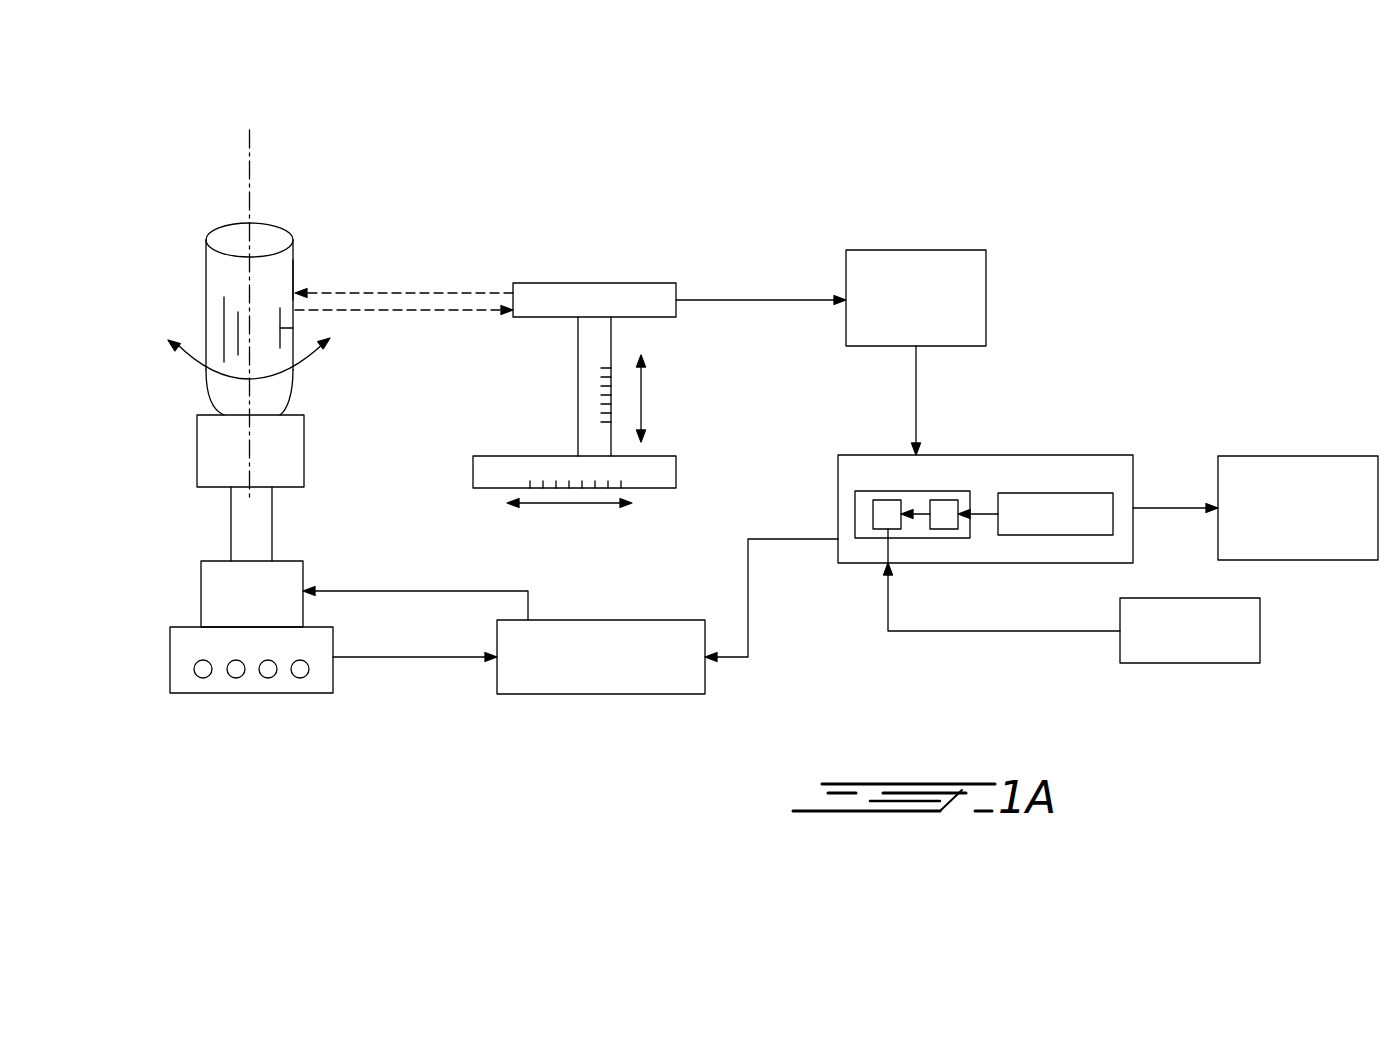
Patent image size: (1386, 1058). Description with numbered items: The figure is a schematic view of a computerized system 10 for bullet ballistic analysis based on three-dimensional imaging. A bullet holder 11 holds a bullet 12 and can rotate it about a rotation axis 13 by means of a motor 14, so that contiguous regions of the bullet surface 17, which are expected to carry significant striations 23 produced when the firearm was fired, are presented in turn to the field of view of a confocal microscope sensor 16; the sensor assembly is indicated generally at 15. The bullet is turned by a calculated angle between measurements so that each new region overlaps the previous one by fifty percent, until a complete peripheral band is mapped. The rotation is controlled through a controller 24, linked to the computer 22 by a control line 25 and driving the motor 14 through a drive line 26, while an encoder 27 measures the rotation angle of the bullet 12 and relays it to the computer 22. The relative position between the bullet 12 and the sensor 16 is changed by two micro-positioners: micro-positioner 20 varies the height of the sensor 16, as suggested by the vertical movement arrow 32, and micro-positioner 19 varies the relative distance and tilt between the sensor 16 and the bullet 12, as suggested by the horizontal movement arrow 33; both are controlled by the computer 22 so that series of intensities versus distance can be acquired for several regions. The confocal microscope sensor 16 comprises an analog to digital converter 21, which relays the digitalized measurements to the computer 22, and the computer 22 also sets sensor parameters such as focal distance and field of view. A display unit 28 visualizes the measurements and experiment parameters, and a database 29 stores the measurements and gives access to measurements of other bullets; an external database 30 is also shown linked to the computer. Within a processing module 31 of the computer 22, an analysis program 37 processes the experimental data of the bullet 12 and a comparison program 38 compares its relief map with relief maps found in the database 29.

The computerized system 10 is at (1075, 295).
The bullet holder 11 is at (197, 452).
The bullet 12 is at (206, 265).
The rotation axis 13 is at (249, 189).
The motor 14 is at (303, 570).
The sensor assembly 15 is at (569, 255).
The confocal microscope sensor 16 is at (530, 318).
The surface 17 is at (278, 278).
The micro-positioner 19 is at (676, 470).
The micro-positioner 20 is at (612, 330).
The analog to digital converter 21 is at (908, 250).
The computer 22 is at (1068, 456).
The striations 23 is at (238, 323).
The controller 24 is at (600, 694).
The control line from computer to motor controller 25 is at (748, 637).
The drive line from motor controller to motor 26 is at (425, 591).
The encoder 27 is at (240, 693).
The display unit 28 is at (1268, 456).
The database 29 is at (1090, 492).
The external database 30 is at (1188, 664).
The processing module 31 is at (855, 505).
The vertical movement direction 32 is at (641, 400).
The horizontal movement direction 33 is at (558, 505).
The analysis program 37 is at (943, 529).
The comparison program 38 is at (873, 518).